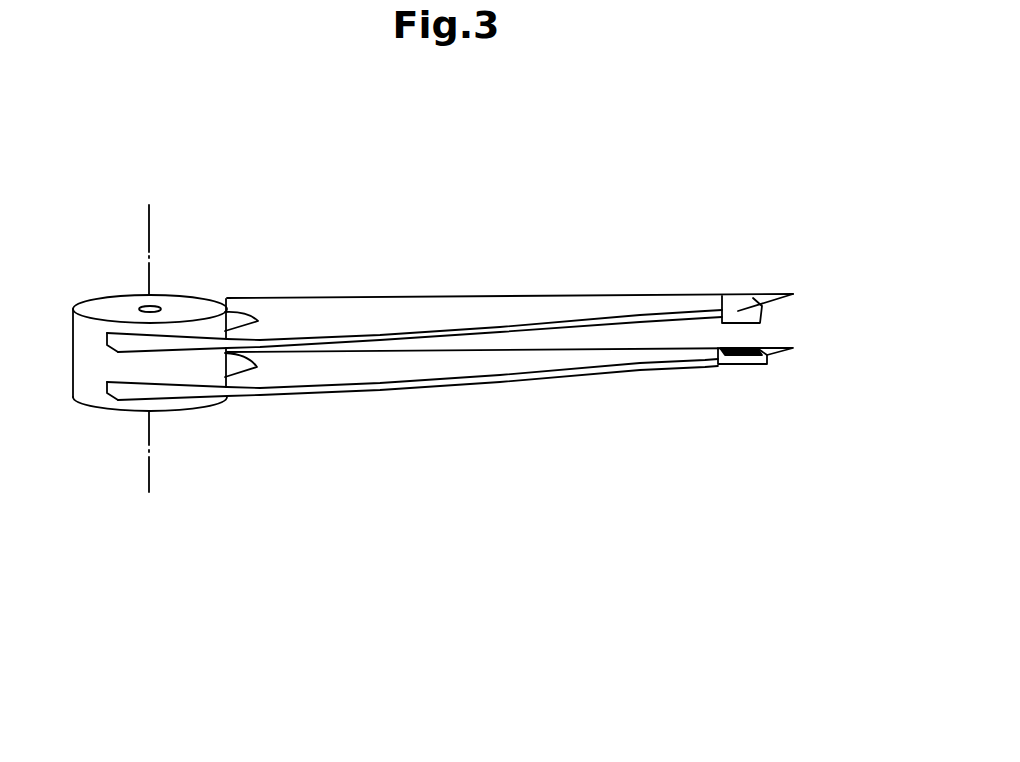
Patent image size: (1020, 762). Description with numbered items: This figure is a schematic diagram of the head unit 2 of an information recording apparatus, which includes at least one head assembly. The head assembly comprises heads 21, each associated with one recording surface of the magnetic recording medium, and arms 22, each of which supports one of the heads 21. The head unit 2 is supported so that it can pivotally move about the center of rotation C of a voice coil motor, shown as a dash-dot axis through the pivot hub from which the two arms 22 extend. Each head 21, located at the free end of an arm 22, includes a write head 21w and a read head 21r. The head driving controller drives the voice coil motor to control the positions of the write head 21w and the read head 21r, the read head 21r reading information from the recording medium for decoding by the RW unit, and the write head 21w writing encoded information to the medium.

The head unit 2 is at (368, 558).
The arm 22 is at (412, 277).
The head 21 is at (697, 200).
The read head 21r is at (722, 297).
The write head 21w is at (748, 298).
The center of rotation C is at (149, 333).